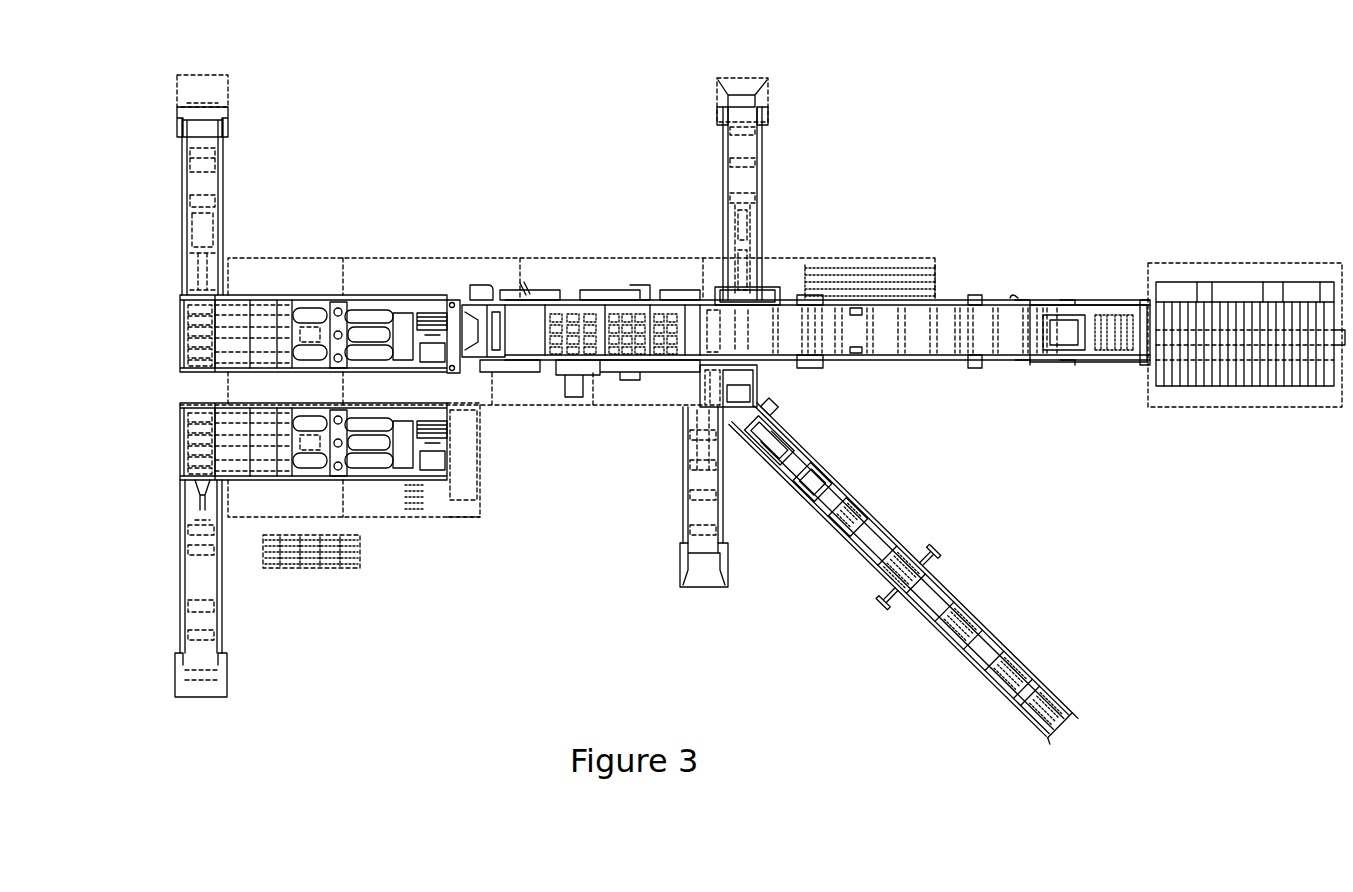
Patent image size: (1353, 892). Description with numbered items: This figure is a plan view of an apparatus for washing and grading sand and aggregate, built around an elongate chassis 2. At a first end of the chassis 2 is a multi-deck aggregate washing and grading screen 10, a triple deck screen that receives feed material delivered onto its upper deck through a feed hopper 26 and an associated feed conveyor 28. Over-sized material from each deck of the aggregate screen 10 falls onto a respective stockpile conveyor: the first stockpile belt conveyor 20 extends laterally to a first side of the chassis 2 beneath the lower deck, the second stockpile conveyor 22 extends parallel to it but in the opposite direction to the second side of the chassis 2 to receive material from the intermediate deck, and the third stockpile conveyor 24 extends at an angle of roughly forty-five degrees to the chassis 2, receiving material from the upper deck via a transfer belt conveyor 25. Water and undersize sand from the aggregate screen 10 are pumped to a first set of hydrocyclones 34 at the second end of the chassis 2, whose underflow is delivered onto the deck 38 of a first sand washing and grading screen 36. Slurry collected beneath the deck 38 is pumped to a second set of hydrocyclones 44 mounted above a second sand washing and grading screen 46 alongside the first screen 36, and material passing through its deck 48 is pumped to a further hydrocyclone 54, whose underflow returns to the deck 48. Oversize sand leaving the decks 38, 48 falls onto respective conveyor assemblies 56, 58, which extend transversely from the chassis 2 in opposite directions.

The chassis 2 is at (455, 295).
The multi-deck aggregate washing and grading screen 10 is at (585, 300).
The first stockpile belt conveyor 20 is at (687, 512).
The second stockpile conveyor 22 is at (757, 207).
The third stockpile conveyor 24 is at (940, 600).
The transfer belt conveyor 25 is at (743, 377).
The feed hopper 26 is at (1243, 372).
The feed conveyor 28 is at (1030, 310).
The first set of hydrocyclones 34 is at (357, 308).
The first sand washing and grading screen 36 is at (263, 362).
The deck 38 is at (267, 323).
The second set of hydrocyclones 44 is at (420, 440).
The second sand washing and grading screen 46 is at (198, 482).
The deck 48 is at (265, 452).
The further hydrocyclone 54 is at (352, 457).
The conveyor assembly 56 is at (187, 213).
The conveyor assembly 58 is at (185, 593).